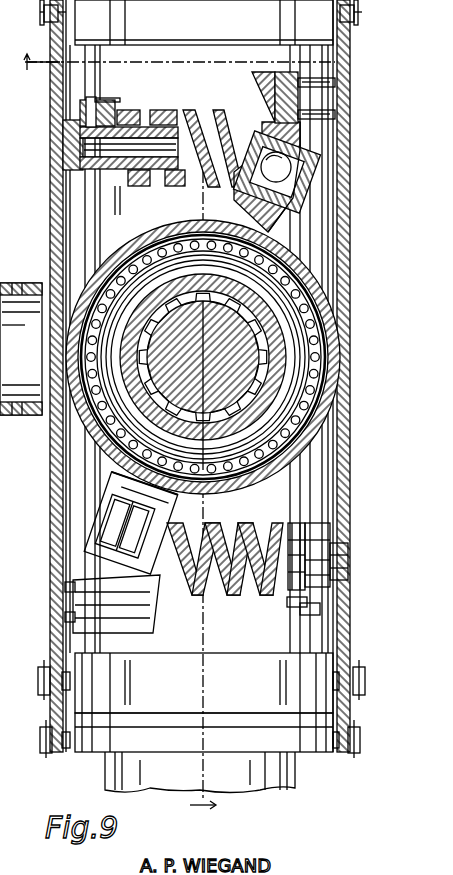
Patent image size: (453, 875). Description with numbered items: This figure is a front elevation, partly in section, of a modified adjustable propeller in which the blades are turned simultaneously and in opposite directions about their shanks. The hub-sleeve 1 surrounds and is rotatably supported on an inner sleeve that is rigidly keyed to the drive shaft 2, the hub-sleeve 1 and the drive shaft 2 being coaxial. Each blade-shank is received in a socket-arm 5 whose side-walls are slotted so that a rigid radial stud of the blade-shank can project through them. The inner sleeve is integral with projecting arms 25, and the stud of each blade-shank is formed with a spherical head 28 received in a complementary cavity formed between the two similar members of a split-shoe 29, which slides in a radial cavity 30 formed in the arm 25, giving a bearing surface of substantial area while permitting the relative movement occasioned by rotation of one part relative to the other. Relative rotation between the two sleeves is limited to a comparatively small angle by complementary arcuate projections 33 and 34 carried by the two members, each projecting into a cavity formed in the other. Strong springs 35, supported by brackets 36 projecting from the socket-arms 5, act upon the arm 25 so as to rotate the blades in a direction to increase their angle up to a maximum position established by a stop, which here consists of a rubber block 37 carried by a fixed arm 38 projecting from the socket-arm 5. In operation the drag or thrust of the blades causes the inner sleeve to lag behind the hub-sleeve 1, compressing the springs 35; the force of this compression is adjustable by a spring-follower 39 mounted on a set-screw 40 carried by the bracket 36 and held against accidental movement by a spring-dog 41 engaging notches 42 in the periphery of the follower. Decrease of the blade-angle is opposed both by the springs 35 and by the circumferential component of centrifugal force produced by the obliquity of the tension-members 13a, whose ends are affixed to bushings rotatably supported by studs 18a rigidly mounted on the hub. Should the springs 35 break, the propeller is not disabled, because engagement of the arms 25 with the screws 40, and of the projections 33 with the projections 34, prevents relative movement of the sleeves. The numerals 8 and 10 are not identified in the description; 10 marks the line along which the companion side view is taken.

The hub-sleeve 1 is at (223, 436).
The drive shaft 2 is at (182, 346).
The socket-arm 5 is at (180, 427).
The casing pipe 8 is at (115, 770).
The direction of movement 10 is at (109, 441).
The tension member 13a is at (343, 165).
The stud 18a is at (372, 718).
The arm 25 is at (282, 230).
The spherical head 28 is at (310, 148).
The split-shoe 29 is at (290, 172).
The radial cavity 30 is at (296, 198).
The arcuate projection 33 is at (165, 232).
The arcuate projection 34 is at (190, 230).
The spring 35 is at (190, 110).
The bracket 36 is at (85, 195).
The rubber block 37 is at (287, 72).
The fixed arm 38 is at (320, 100).
The spring-follower 39 is at (120, 186).
The set-screw 40 is at (143, 112).
The spring-dog 41 is at (96, 100).
The notch 42 is at (290, 600).